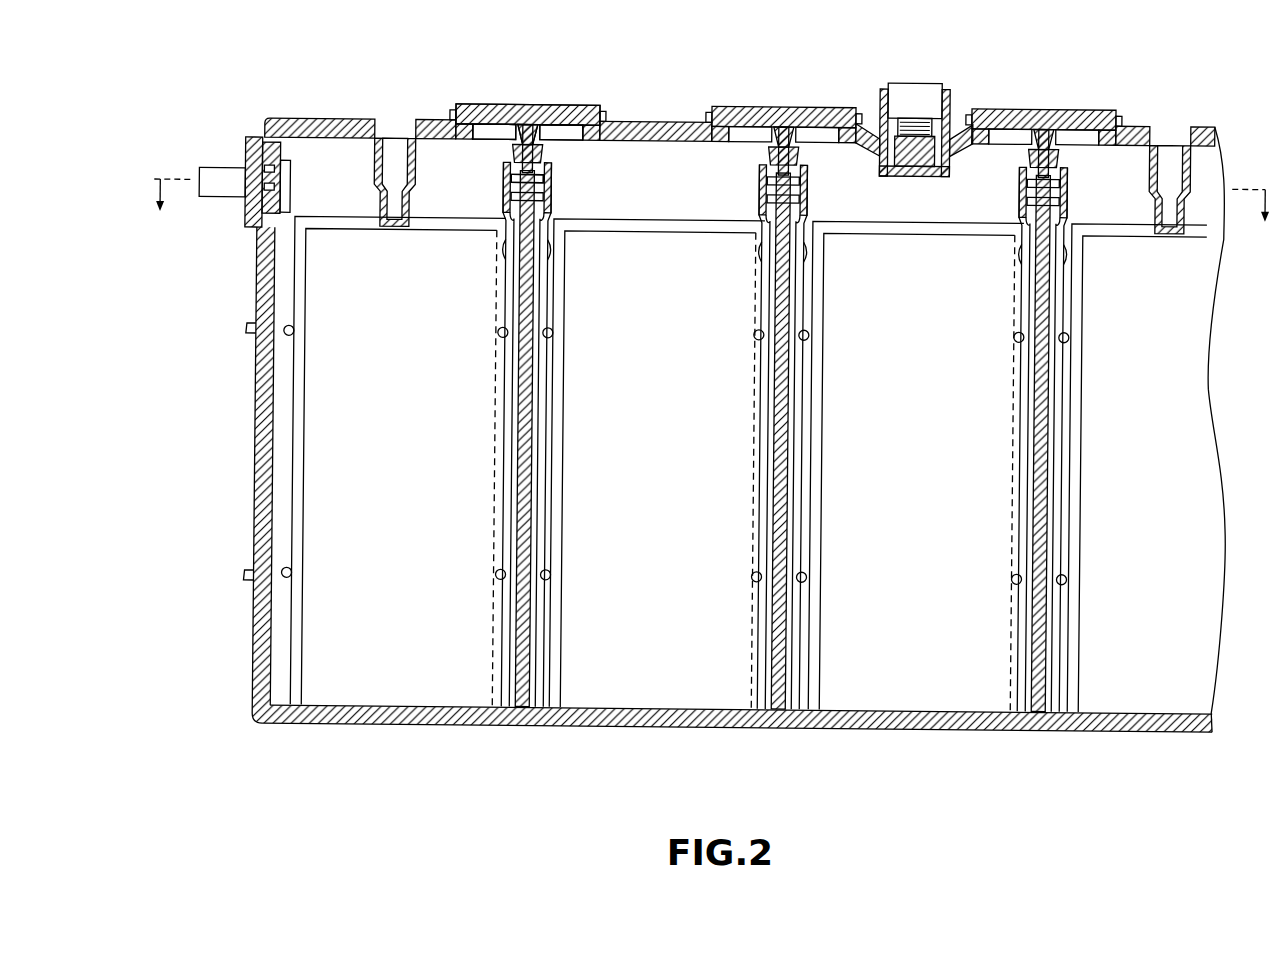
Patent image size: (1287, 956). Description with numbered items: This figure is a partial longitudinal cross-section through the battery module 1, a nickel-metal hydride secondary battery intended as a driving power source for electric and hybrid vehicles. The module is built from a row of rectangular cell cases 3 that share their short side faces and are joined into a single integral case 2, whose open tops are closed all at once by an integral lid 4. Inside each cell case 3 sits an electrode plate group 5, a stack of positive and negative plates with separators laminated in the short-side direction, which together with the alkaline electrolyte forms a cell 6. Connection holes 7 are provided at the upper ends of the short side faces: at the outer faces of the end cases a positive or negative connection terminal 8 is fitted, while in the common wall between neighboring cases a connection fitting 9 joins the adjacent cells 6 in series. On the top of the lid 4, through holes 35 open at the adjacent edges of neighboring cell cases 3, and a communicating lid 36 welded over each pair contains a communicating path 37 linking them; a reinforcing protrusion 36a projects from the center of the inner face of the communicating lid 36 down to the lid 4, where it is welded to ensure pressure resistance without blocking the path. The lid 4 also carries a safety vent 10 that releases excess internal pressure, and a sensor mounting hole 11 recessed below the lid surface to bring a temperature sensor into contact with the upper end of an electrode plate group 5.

The battery module 1 is at (708, 409).
The integral case 2 is at (252, 504).
The cell case 3 is at (346, 723).
The integral lid 4 is at (296, 118).
The electrode plate group 5 is at (1180, 464).
The cell 6 is at (392, 732).
The connection hole 7 is at (501, 193).
The connection terminal 8 is at (216, 168).
The connection fitting 9 is at (547, 190).
The safety vent 10 is at (907, 77).
The sensor mounting hole 11 is at (382, 150).
The through hole 35 is at (561, 136).
The communicating lid 36 is at (468, 102).
The reinforcing protrusion 36a is at (530, 120).
The communicating path 37 is at (500, 114).